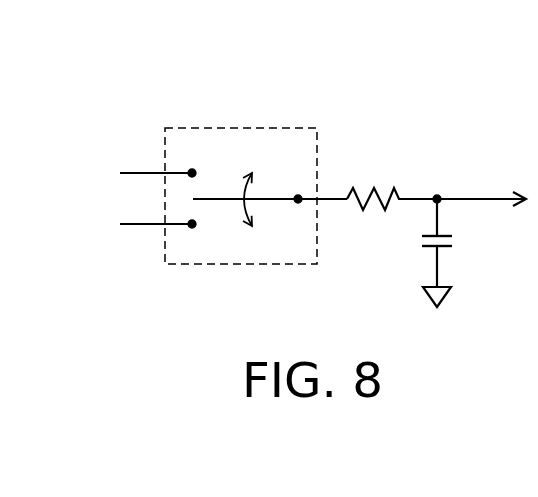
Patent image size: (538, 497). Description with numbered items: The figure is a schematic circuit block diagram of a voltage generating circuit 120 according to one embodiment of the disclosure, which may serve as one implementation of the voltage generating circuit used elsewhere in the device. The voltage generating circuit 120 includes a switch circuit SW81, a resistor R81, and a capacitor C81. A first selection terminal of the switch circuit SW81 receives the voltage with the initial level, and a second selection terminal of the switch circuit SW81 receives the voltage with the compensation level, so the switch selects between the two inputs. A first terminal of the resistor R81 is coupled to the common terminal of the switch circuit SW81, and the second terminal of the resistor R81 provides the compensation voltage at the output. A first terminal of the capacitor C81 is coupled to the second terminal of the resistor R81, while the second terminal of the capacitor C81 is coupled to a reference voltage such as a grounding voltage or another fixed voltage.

The voltage generating circuit 120 is at (443, 76).
The switch circuit SW81 is at (240, 127).
The resistor R81 is at (392, 180).
The capacitor C81 is at (457, 253).